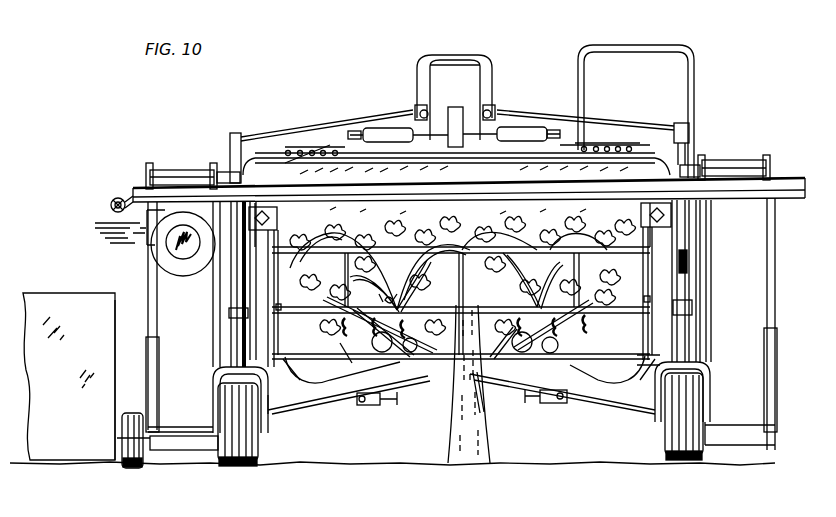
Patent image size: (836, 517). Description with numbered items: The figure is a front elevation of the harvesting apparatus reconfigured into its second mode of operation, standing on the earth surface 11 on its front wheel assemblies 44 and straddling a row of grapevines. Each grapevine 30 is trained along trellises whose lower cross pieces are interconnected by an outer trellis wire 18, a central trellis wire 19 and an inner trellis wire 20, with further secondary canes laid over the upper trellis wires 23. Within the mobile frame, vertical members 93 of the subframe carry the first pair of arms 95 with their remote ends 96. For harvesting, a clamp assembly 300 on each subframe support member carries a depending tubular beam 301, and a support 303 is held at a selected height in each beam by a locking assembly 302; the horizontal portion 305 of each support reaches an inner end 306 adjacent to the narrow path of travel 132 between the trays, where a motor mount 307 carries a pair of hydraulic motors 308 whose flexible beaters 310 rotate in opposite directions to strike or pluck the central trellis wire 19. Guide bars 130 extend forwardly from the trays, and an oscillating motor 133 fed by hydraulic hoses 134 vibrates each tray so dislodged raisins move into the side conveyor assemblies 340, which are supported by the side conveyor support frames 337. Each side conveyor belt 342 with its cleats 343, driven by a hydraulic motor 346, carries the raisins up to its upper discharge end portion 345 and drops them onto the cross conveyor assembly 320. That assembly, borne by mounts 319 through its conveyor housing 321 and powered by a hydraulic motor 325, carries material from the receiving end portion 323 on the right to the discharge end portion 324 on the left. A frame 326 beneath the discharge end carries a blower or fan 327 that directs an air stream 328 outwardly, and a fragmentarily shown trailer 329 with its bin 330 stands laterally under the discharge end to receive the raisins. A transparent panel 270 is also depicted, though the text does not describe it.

The earth surface 11 is at (765, 459).
The outer trellis wire 18 is at (388, 300).
The central trellis wire 19 is at (383, 291).
The inner trellis wire 20 is at (428, 278).
The upper trellis wires 23 is at (346, 236).
The grapevine 30 is at (455, 440).
The front wheel assembly 44 is at (258, 447).
The vertical member 93 is at (268, 327).
The first pair of arms 95 is at (346, 356).
The remote ends 96 is at (395, 365).
The guide bars 130 is at (398, 388).
The path of travel 132 is at (480, 414).
The oscillating motor 133 is at (363, 405).
The hydraulic hoses 134 is at (380, 404).
The transparent panel 270 is at (430, 213).
The clamp assembly 300 is at (274, 247).
The tubular beam 301 is at (275, 288).
The locking assembly 302 is at (279, 307).
The support 303 is at (273, 344).
The horizontal portion 305 is at (617, 357).
The inner end 306 is at (412, 373).
The motor mount 307 is at (557, 343).
The hydraulic motors 308 is at (417, 343).
The beaters 310 is at (517, 350).
The mount 319 is at (278, 217).
The cross conveyor assembly 320 is at (358, 180).
The conveyor housing 321 is at (565, 203).
The receiving end portion 323 is at (748, 186).
The discharge end portion 324 is at (111, 203).
The hydraulic motor 325 is at (114, 199).
The frame 326 is at (145, 221).
The blower or fan 327 is at (167, 248).
The air stream 328 is at (127, 231).
The trailer 329 is at (90, 452).
The bin 330 is at (97, 318).
The side conveyor support frame 337 is at (213, 357).
The side conveyor assemblies 340 is at (178, 321).
The conveyor belt 342 is at (150, 176).
The cleats 343 is at (182, 170).
The upper discharge end portions 345 is at (148, 167).
The hydraulic motor 346 is at (228, 170).